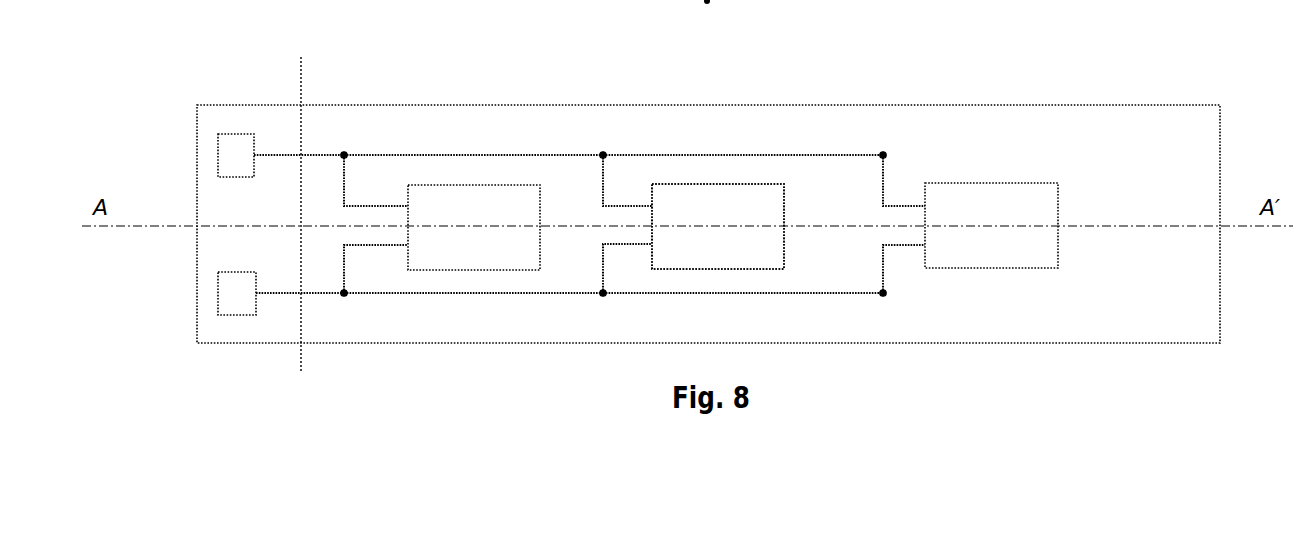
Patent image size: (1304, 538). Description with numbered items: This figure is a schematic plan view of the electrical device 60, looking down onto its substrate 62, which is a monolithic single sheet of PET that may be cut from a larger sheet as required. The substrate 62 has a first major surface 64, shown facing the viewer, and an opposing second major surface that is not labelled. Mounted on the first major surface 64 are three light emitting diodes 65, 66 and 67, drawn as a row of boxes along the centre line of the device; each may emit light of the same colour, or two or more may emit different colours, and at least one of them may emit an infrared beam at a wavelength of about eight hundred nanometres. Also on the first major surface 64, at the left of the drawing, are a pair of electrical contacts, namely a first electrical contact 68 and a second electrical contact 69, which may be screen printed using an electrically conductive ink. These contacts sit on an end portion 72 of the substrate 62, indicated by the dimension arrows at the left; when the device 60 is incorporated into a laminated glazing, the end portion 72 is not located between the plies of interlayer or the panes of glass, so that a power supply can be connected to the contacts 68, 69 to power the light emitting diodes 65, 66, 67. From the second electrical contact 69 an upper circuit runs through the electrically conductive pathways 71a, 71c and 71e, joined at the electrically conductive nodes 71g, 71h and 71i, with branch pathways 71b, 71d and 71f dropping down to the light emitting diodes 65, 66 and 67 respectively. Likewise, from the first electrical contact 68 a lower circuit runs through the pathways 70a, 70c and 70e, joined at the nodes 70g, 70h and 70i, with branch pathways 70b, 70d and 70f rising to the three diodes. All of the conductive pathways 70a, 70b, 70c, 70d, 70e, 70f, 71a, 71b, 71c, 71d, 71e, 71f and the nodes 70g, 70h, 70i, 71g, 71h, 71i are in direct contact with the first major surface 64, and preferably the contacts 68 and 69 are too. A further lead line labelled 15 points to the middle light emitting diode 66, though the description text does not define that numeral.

The electrical device 60 is at (1062, 72).
The substrate 62 is at (1103, 130).
The first major surface 64 is at (805, 126).
The end portion 72 is at (300, 67).
The second electrical contact 69 is at (230, 149).
The first electrical contact 68 is at (235, 297).
The light emitting diode 65 is at (474, 227).
The light emitting diode 66 is at (718, 226).
The light emitting diode 67 is at (991, 225).
The component 15 is at (786, 208).
The electrically conductive pathway 71a is at (299, 141).
The electrically conductive pathway 71b is at (376, 180).
The electrically conductive pathway 71c is at (473, 140).
The electrically conductive pathway 71d is at (627, 180).
The electrically conductive pathway 71e is at (743, 140).
The electrically conductive pathway 71f is at (904, 180).
The electrically conductive node 71g is at (348, 141).
The electrically conductive node 71h is at (606, 141).
The electrically conductive node 71i is at (880, 141).
The electrically conductive pathway 70a is at (300, 280).
The electrically conductive pathway 70b is at (376, 269).
The electrically conductive pathway 70c is at (473, 308).
The electrically conductive pathway 70d is at (627, 268).
The electrically conductive pathway 70e is at (743, 308).
The electrically conductive pathway 70f is at (904, 269).
The electrically conductive node 70g is at (349, 307).
The electrically conductive node 70h is at (606, 307).
The electrically conductive node 70i is at (881, 307).